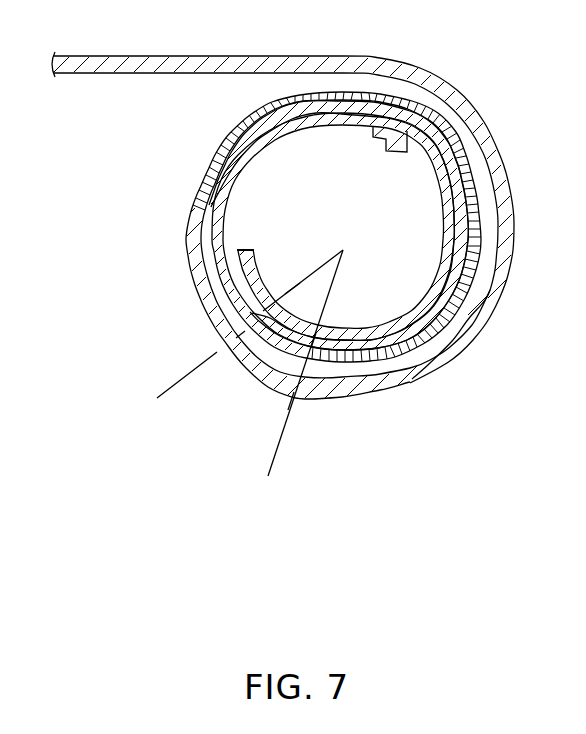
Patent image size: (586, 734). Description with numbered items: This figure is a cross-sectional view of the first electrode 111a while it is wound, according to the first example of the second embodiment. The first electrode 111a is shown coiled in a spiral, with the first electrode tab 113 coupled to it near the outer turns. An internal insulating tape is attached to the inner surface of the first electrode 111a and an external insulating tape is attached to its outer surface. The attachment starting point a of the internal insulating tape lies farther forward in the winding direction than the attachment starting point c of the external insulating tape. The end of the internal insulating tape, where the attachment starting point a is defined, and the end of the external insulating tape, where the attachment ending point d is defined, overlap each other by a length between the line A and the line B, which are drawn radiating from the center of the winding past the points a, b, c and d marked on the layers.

The first electrode tab 113 is at (398, 128).
The first electrode 111a is at (410, 381).
The line A is at (239, 336).
The line B is at (298, 377).
The attachment starting point of the internal insulating tape a is at (283, 289).
The point b is at (250, 332).
The attachment starting point of the external insulating tape c is at (304, 350).
The attachment ending point of the external insulating tape d is at (299, 411).